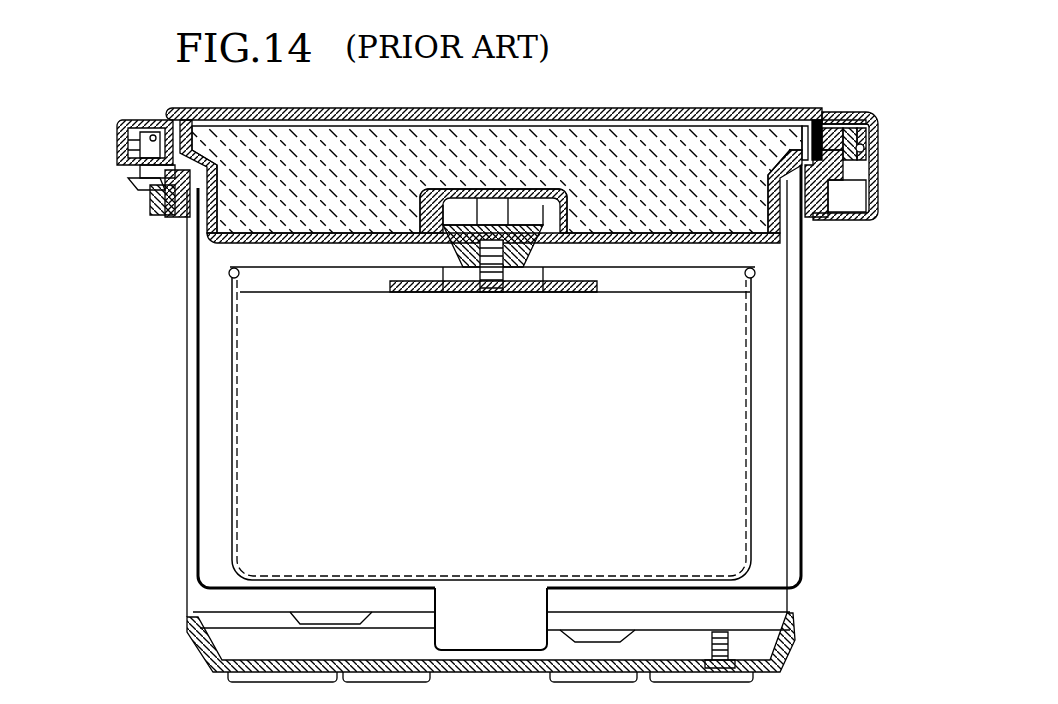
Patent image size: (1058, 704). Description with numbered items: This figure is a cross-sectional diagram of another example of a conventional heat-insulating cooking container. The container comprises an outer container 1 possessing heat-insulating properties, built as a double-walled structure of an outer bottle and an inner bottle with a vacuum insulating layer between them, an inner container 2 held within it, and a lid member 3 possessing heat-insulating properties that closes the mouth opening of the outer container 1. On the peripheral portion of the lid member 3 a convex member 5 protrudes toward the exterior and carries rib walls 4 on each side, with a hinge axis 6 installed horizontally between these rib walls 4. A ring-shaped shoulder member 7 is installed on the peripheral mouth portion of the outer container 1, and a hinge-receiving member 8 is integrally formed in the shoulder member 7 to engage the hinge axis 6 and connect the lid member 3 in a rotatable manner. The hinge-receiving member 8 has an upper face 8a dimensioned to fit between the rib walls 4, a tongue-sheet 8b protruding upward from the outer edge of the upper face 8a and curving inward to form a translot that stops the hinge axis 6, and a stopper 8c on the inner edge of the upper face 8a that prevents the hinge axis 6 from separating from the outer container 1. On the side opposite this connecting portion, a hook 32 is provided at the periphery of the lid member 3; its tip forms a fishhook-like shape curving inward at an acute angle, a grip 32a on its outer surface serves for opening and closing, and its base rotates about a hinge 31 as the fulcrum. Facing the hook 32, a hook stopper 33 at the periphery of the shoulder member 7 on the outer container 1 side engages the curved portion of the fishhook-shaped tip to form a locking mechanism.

The outer container 1 is at (808, 417).
The inner container 2 is at (760, 374).
The lid member 3 is at (635, 106).
The rib walls 4 is at (876, 112).
The convex member 5 is at (864, 100).
The hinge axis 6 is at (878, 156).
The shoulder member 7 is at (178, 217).
The hinge-receiving member 8 is at (882, 210).
The upper face 8a is at (848, 140).
The tongue-sheet 8b is at (878, 140).
The stopper 8c is at (826, 140).
The hinge 31 is at (153, 133).
The hook 32 is at (148, 212).
The grip 32a is at (148, 188).
The hook stopper 33 is at (150, 176).